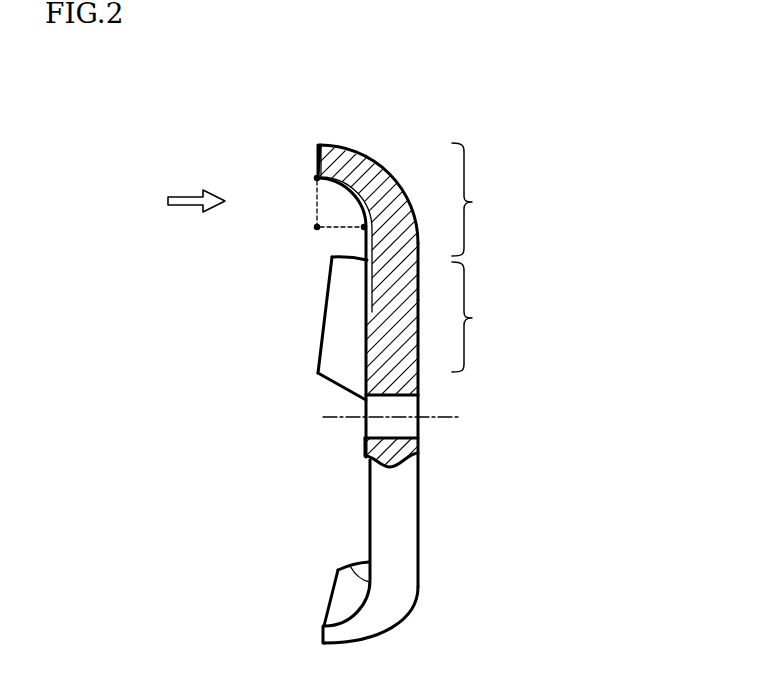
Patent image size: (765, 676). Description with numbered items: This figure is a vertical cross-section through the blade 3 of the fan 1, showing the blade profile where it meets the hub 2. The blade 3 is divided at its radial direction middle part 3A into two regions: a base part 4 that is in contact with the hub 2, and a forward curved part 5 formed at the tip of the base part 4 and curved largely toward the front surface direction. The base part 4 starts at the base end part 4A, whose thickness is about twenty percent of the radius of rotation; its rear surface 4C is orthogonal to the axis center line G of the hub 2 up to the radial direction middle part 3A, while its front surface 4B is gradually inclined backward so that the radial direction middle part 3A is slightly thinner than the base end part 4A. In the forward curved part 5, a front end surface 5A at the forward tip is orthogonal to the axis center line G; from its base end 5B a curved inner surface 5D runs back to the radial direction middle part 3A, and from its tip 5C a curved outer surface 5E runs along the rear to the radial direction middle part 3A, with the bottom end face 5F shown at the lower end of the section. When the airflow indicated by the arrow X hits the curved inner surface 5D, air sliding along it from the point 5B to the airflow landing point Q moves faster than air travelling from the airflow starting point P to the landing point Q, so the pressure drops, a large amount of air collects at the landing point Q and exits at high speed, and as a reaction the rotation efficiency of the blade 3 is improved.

The hook member 1 is at (490, 170).
The hub 2 is at (365, 445).
The blade 3 is at (358, 148).
The radial direction middle part 3A is at (420, 264).
The base part 4 is at (473, 317).
The base end part 4A is at (418, 393).
The front surface 4B is at (372, 313).
The rear surface 4C is at (418, 317).
The forward curved part 5 is at (473, 199).
The front end surface 5A is at (318, 170).
The base end of the front end surface 5B is at (316, 179).
The tip of the front end surface 5C is at (319, 143).
The curved inner surface 5D is at (332, 257).
The curved outer surface 5E is at (393, 168).
The bottom end face 5F is at (323, 630).
The axis center line G is at (448, 420).
The airflow starting point P is at (315, 227).
The airflow landing point Q is at (362, 228).
The arrow indicating airflow X is at (185, 202).